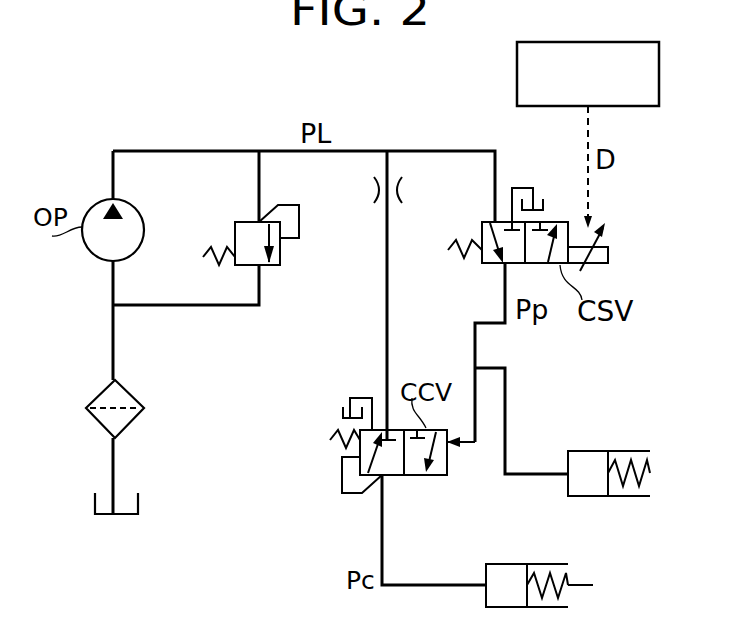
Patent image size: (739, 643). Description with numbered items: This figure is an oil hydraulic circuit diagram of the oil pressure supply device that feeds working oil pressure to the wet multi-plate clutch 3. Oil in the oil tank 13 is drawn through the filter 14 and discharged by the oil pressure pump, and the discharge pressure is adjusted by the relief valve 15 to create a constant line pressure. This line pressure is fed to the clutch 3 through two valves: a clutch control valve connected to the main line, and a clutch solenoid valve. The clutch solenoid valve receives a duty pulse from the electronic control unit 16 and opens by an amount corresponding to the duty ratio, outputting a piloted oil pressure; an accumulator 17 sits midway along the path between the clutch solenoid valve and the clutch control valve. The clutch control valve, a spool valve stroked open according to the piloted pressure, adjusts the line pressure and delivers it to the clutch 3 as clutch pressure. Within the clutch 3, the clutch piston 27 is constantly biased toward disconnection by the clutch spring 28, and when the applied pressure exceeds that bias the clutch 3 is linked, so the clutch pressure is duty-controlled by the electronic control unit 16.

The wet multi-plate clutch 3 is at (513, 560).
The oil tank 13 is at (95, 500).
The filter 14 is at (98, 394).
The relief valve 15 is at (280, 252).
The electronic control unit 16 is at (601, 88).
The accumulator 17 is at (598, 450).
The clutch piston 27 is at (508, 568).
The clutch spring 28 is at (548, 567).